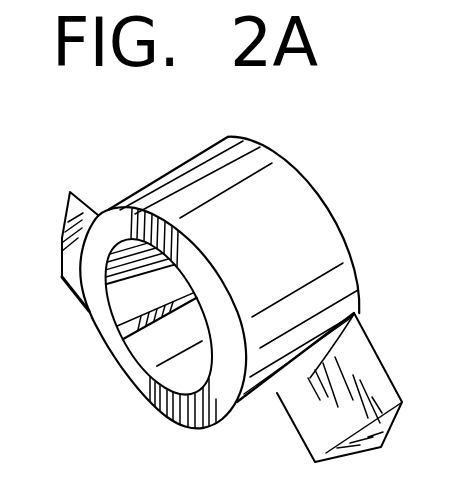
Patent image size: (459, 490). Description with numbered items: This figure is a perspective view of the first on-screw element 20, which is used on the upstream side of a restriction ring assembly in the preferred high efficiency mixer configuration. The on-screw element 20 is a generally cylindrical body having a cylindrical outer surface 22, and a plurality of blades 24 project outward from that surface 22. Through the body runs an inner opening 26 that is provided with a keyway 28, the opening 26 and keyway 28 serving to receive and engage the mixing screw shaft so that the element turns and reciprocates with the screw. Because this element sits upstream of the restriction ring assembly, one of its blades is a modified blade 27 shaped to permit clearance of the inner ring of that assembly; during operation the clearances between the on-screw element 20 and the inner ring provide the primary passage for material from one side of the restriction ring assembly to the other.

The on-screw element 20 is at (359, 281).
The cylindrical outer surface 22 is at (198, 177).
The blades 24 is at (93, 204).
The inner opening 26 is at (160, 364).
The modified blade 27 is at (392, 399).
The keyway 28 is at (116, 296).